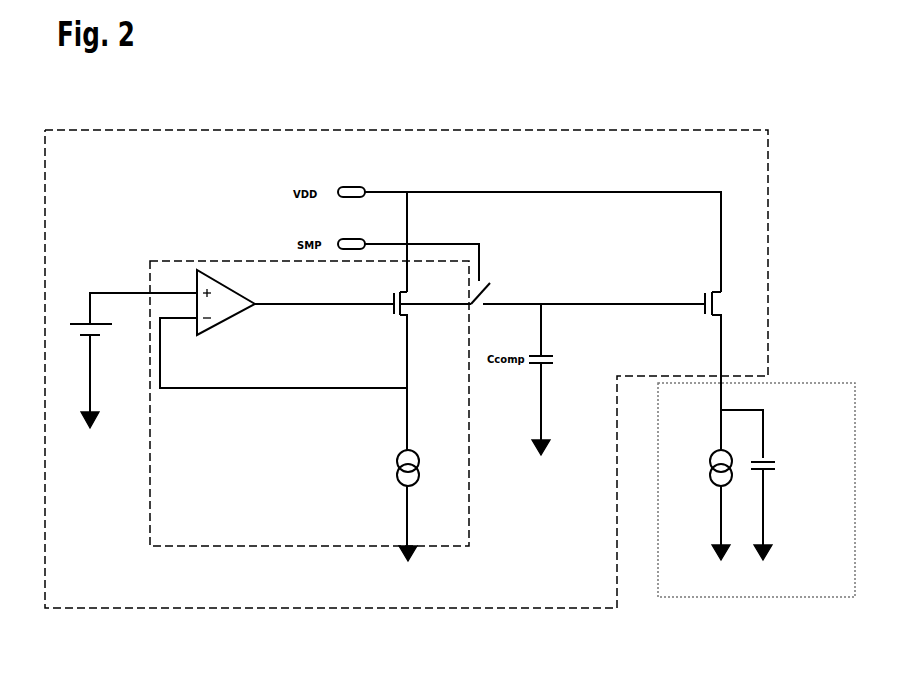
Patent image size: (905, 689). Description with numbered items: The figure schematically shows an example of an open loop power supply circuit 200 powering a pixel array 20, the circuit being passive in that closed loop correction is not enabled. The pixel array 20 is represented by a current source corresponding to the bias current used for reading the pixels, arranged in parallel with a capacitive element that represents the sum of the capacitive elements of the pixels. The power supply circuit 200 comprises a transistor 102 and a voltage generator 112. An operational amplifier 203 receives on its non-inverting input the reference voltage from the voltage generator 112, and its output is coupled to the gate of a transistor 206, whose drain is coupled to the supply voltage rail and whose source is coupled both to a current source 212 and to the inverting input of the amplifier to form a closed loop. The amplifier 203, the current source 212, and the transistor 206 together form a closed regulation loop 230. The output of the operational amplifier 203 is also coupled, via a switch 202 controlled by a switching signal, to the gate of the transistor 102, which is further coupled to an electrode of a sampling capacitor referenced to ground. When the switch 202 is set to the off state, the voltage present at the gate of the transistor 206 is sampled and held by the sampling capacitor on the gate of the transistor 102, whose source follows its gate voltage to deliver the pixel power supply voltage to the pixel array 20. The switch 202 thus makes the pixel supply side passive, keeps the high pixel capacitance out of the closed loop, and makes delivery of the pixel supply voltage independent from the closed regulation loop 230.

The open loop power supply circuit 200 is at (772, 190).
The closed regulation loop 230 is at (470, 443).
The operational amplifier 203 is at (199, 263).
The voltage generator 112 is at (103, 342).
The transistor 206 is at (418, 313).
The switch 202 is at (497, 285).
The transistor 102 is at (735, 305).
The current source 212 is at (420, 475).
The pixel array 20 is at (690, 600).